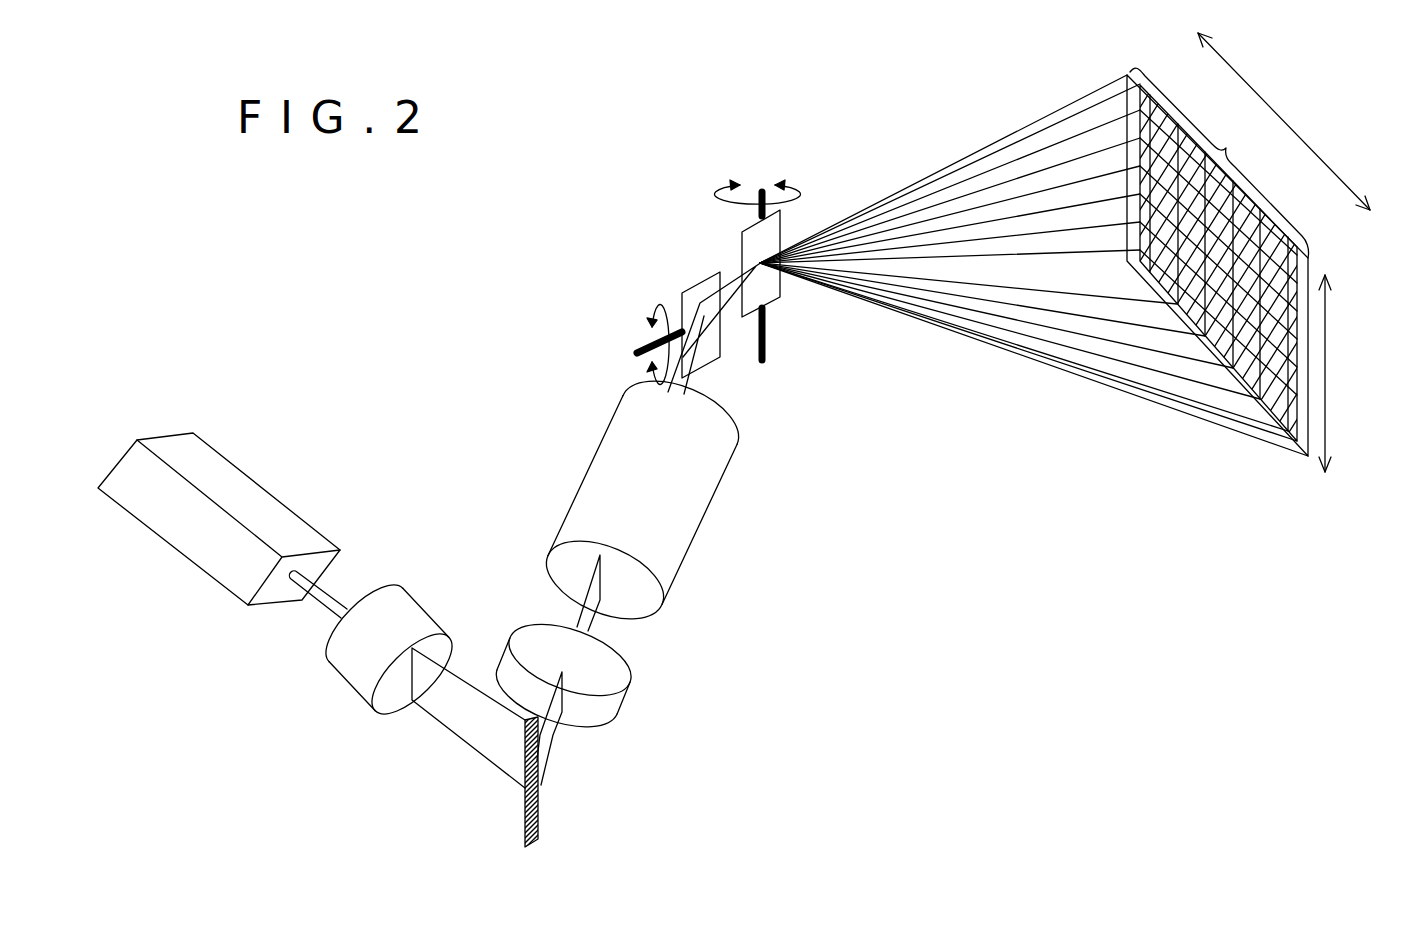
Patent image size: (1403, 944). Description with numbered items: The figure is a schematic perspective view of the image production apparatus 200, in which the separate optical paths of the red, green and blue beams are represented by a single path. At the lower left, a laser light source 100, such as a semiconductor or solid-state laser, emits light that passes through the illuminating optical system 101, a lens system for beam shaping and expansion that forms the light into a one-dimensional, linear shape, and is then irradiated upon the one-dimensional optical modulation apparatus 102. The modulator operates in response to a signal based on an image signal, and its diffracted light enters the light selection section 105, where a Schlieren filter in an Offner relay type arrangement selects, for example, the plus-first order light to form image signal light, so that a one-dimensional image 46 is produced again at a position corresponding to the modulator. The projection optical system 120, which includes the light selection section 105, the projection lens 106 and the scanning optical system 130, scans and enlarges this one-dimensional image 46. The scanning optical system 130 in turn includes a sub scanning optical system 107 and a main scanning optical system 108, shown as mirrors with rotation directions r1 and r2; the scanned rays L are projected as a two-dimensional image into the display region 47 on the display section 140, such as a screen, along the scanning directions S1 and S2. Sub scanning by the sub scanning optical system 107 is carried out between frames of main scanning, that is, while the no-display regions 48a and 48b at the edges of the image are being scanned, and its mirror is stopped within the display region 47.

The laser light source 100 is at (217, 452).
The illuminating optical system 101 is at (330, 680).
The optical modulation apparatus 102 is at (540, 818).
The light selection section 105 is at (633, 703).
The projection lens 106 is at (698, 542).
The one-dimensional image 46 is at (597, 632).
The sub scanning optical system 107 is at (710, 352).
The main scanning optical system 108 is at (772, 293).
The projection optical system 120 is at (490, 310).
The scanning optical system 130 is at (720, 182).
The display section 140 is at (1295, 433).
The image production apparatus 200 is at (1103, 572).
The display region 47 is at (1219, 163).
The no-display region 48a is at (1132, 78).
The no-display region 48b is at (1306, 256).
The scanned light rays L is at (1045, 372).
The first scanning direction S1 is at (1283, 112).
The second scanning direction S2 is at (1328, 357).
The first rotation direction r1 is at (665, 298).
The second rotation direction r2 is at (802, 187).